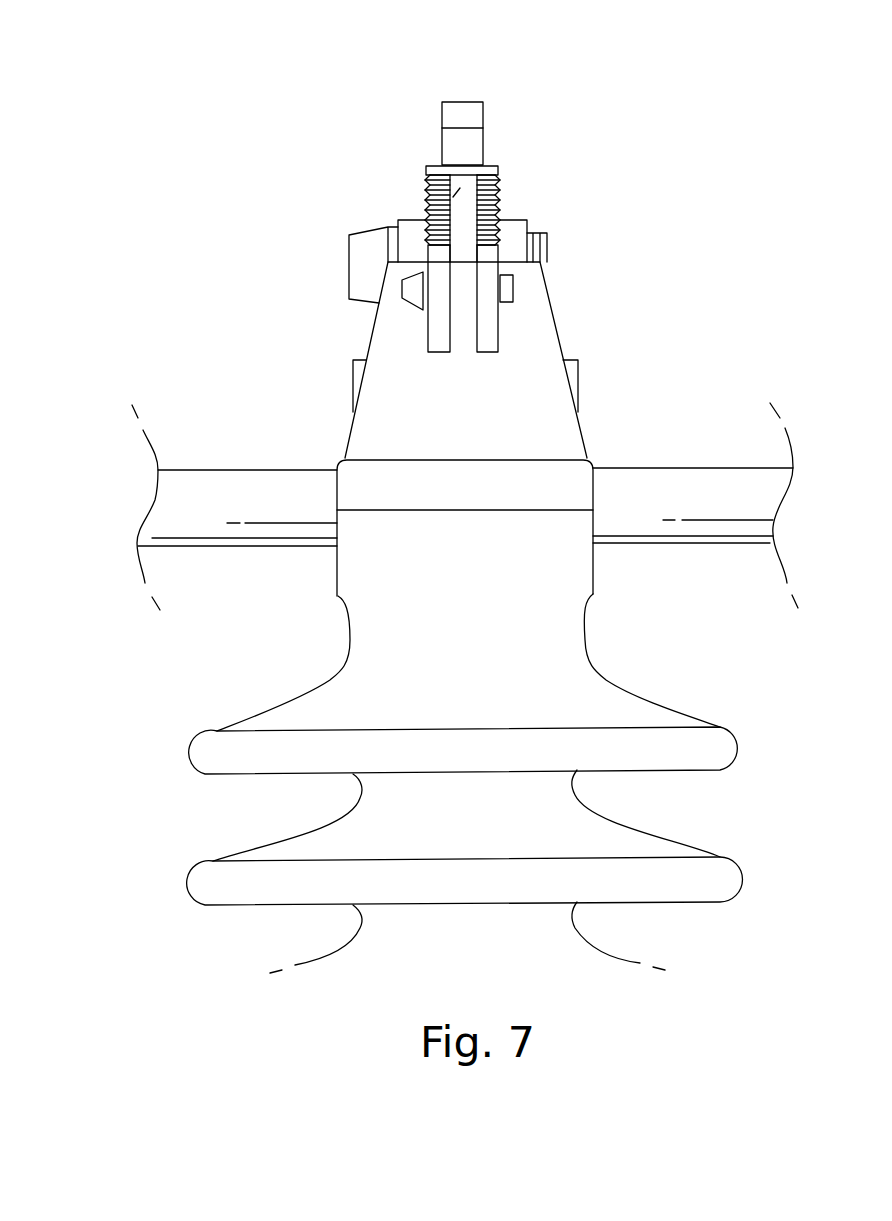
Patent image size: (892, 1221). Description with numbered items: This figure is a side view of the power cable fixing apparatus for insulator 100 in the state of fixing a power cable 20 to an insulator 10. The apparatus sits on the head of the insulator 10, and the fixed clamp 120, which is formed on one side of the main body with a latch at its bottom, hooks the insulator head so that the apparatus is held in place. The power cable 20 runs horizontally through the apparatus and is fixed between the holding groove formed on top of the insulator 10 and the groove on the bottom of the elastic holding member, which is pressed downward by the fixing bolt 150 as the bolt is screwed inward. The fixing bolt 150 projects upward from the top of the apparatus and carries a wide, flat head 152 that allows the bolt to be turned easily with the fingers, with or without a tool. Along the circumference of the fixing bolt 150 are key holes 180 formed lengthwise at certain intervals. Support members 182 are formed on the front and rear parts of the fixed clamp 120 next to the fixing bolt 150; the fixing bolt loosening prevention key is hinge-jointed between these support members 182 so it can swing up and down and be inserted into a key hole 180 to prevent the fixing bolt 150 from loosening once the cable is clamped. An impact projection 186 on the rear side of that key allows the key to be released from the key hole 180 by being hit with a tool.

The insulator 10 is at (203, 753).
The power cable 20 is at (690, 527).
The power cable fixing apparatus for insulator 100 is at (666, 188).
The fixed clamp 120 is at (568, 440).
The fixing bolt 150 is at (497, 192).
The flat head 152 is at (463, 110).
The key holes 180 is at (430, 198).
The support members 182 is at (442, 333).
The impact projection 186 is at (462, 312).